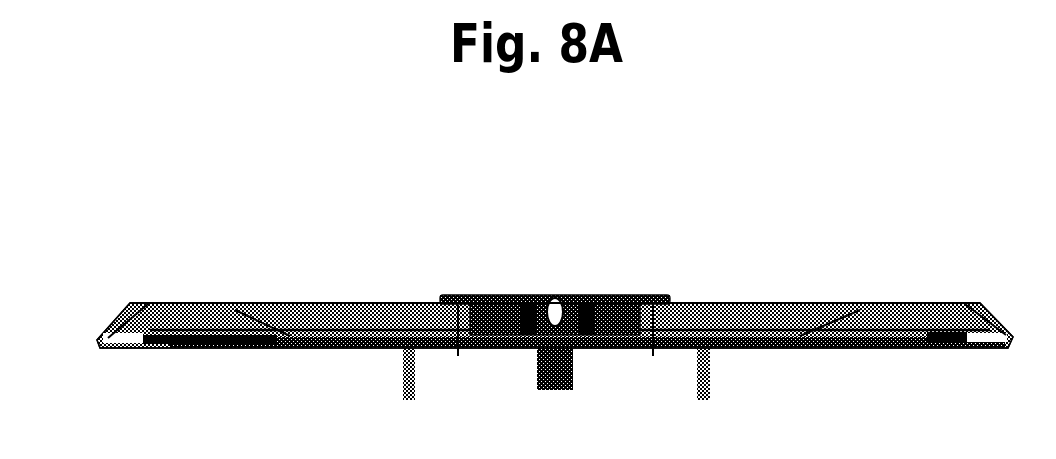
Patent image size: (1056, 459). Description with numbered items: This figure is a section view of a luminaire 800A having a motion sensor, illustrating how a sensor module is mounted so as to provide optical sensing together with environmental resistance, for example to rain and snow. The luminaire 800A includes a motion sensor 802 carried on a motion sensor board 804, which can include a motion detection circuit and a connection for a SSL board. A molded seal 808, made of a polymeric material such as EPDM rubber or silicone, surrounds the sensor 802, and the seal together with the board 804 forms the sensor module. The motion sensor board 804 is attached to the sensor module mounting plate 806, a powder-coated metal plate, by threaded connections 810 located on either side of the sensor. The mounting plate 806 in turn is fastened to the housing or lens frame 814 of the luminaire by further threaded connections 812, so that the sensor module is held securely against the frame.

The luminaire 800A is at (160, 83).
The motion sensor 802 is at (560, 295).
The motion sensor board 804 is at (472, 295).
The sensor module mounting plate 806 is at (520, 294).
The molded seal 808 is at (620, 293).
The threaded connections 810 is at (529, 294).
The threaded connections 812 is at (460, 350).
The lens frame 814 is at (187, 303).